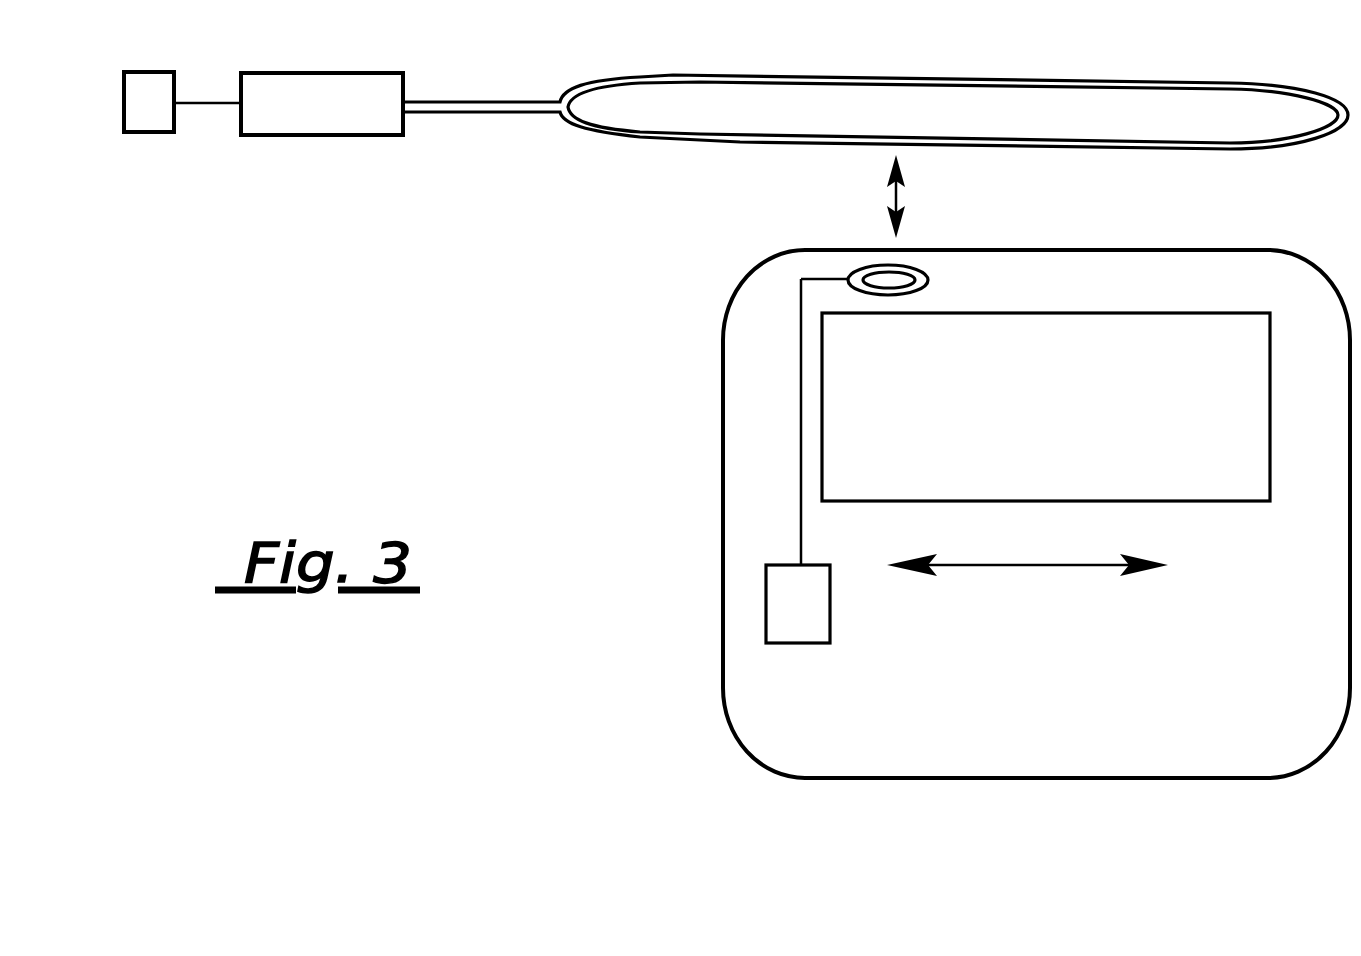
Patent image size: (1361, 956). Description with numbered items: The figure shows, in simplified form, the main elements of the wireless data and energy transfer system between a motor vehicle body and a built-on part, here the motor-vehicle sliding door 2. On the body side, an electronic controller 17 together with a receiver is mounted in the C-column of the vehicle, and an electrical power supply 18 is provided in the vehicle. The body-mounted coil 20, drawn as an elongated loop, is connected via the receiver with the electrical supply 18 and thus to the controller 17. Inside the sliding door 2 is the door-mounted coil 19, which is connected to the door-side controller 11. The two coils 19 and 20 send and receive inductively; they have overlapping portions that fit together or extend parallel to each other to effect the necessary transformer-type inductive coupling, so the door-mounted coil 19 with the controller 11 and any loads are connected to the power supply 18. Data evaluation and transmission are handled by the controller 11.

The motor-vehicle sliding door 2 is at (897, 737).
The controller 11 is at (793, 637).
The electronic controller 17 is at (373, 137).
The electrical power supply 18 is at (152, 132).
The door-mounted coil 19 is at (923, 282).
The body-mounted coil 20 is at (962, 82).